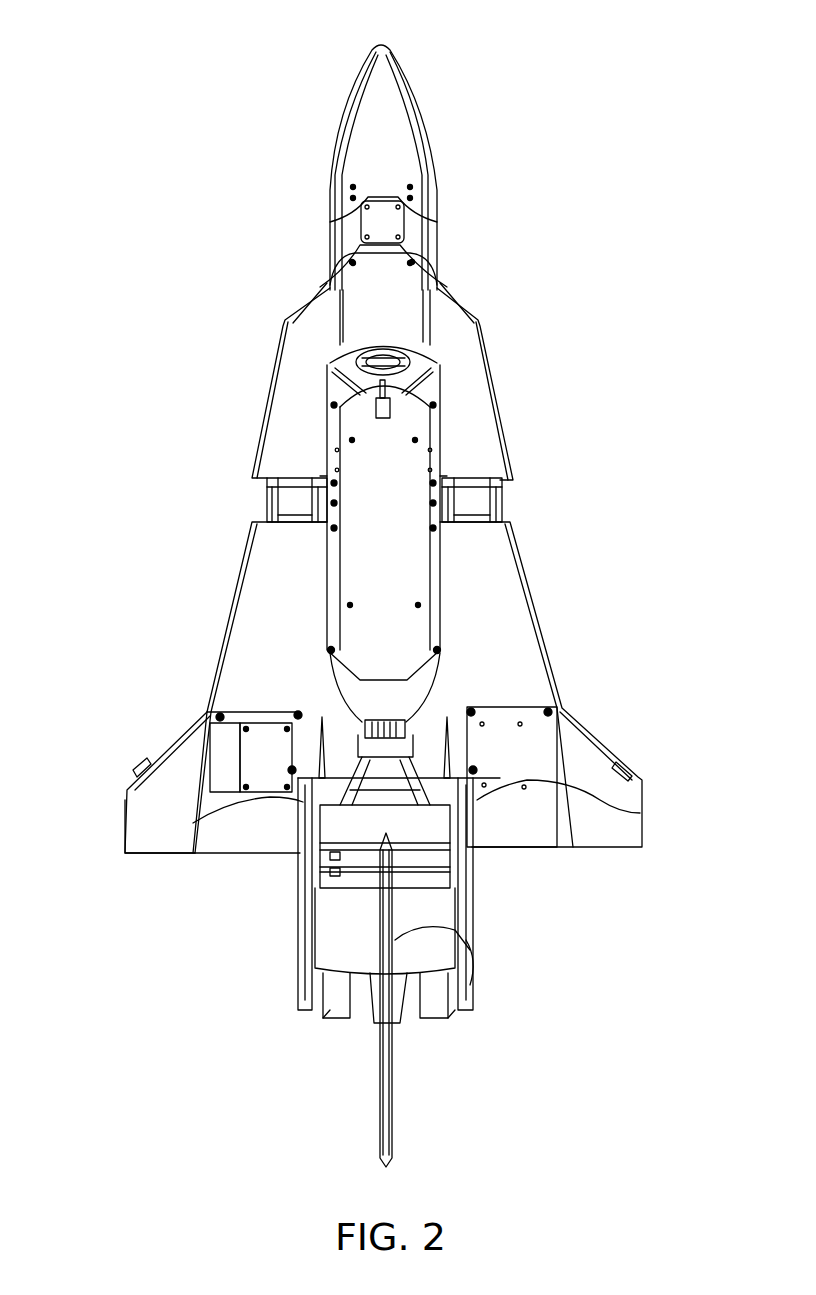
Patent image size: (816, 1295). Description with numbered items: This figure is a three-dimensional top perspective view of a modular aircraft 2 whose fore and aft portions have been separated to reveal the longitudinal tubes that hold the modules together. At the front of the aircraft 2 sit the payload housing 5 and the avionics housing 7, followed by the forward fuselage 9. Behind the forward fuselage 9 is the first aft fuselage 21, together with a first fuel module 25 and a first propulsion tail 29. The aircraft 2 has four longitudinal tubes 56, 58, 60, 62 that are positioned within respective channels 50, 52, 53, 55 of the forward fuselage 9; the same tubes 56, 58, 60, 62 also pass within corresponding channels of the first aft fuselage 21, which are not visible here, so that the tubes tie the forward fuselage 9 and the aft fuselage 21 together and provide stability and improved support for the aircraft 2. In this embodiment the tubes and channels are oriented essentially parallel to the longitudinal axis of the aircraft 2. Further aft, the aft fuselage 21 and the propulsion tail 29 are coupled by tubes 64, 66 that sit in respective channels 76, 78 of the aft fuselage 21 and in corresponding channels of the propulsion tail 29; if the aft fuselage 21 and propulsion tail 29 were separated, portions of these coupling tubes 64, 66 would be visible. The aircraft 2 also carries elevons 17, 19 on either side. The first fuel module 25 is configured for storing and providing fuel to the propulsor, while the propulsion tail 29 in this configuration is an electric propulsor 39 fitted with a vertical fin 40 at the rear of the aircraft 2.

The aircraft 2 is at (275, 55).
The payload housing 5 is at (395, 103).
The avionics housing 7 is at (398, 235).
The forward fuselage 9 is at (312, 345).
The first fuel module 25 is at (410, 555).
The channel 50 is at (270, 470).
The channel 52 is at (317, 462).
The channel 53 is at (455, 462).
The channel 55 is at (498, 470).
The longitudinal tube 56 is at (274, 490).
The longitudinal tube 58 is at (490, 492).
The longitudinal tube 60 is at (312, 498).
The longitudinal tube 62 is at (450, 507).
The first aft fuselage 21 is at (258, 600).
The channel 76 is at (308, 765).
The channel 78 is at (455, 762).
The tube 64 is at (193, 823).
The tube 66 is at (642, 812).
The elevon 17 is at (148, 838).
The elevon 19 is at (612, 827).
The first propulsion tail 29 is at (307, 928).
The electric propulsor 39 is at (446, 1044).
The vertical fin 40 is at (392, 1113).